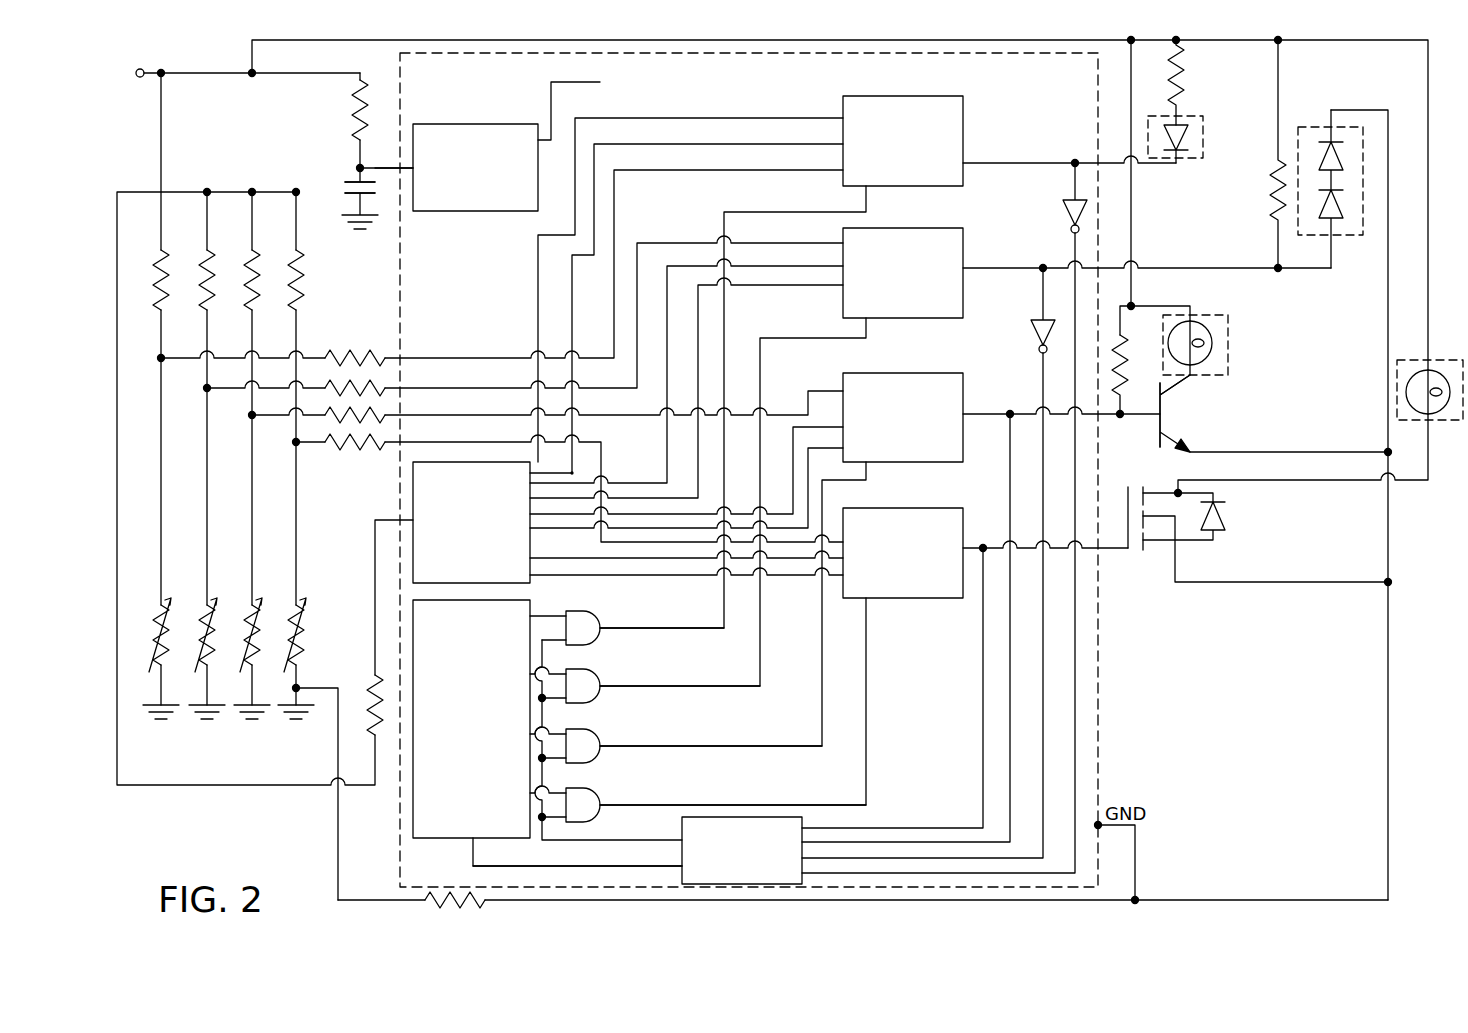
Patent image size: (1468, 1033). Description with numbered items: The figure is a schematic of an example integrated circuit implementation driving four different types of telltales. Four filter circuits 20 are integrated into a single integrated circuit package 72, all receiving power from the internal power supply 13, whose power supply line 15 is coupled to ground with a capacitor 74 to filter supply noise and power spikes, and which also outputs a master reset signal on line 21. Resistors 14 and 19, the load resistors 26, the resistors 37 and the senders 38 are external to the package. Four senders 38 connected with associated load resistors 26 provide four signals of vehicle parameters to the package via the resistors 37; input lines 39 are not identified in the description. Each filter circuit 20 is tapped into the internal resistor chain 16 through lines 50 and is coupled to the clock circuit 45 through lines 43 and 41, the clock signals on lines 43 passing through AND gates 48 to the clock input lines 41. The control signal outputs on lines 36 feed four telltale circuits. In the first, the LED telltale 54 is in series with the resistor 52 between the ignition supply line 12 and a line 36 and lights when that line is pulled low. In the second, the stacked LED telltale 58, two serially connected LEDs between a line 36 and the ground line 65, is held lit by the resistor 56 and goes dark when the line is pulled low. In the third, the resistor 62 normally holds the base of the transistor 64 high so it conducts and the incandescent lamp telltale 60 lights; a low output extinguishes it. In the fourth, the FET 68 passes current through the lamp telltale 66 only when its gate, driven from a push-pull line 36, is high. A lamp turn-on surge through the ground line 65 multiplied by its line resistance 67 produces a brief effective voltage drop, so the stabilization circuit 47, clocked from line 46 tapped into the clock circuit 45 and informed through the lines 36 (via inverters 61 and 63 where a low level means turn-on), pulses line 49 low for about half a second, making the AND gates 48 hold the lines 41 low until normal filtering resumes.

The ignition supply line 12 is at (184, 72).
The internal power supply 13 is at (500, 124).
The resistor 14 is at (371, 695).
The power supply line 15 is at (375, 166).
The resistor chain 16 is at (413, 488).
The resistor 19 is at (353, 112).
The filter circuit 20 is at (905, 96).
The master reset line 21 is at (566, 82).
The load resistor 26 is at (200, 263).
The output line 36 is at (983, 163).
The resistor 37 is at (345, 385).
The sender 38 is at (205, 612).
The input line 39 is at (432, 387).
The clock input line 41 is at (712, 684).
The clock signal line 43 is at (608, 620).
The clock circuit 45 is at (402, 800).
The line 46 is at (592, 862).
The stabilization circuit 47 is at (762, 817).
The AND gate 48 is at (631, 702).
The line 49 is at (560, 843).
The line 50 is at (572, 475).
The resistor 52 is at (1184, 82).
The LED telltale 54 is at (1197, 118).
The resistor 56 is at (1272, 203).
The stacked LED telltale 58 is at (1358, 236).
The incandescent lamp telltale 60 is at (1228, 338).
The inverter 61 is at (1064, 205).
The resistor 62 is at (1130, 365).
The inverter 63 is at (1035, 323).
The transistor 64 is at (1180, 432).
The ground line 65 is at (1230, 898).
The lamp telltale 66 is at (1397, 392).
The line resistance 67 is at (448, 893).
The FET 68 is at (1143, 555).
The integrated circuit package 72 is at (1100, 750).
The capacitor 74 is at (345, 184).